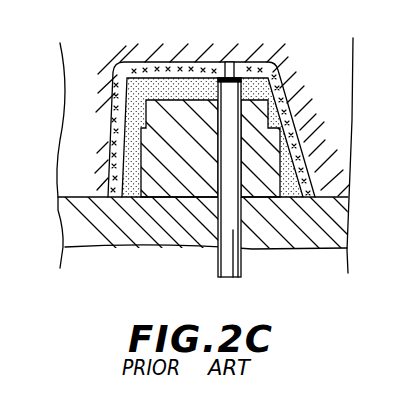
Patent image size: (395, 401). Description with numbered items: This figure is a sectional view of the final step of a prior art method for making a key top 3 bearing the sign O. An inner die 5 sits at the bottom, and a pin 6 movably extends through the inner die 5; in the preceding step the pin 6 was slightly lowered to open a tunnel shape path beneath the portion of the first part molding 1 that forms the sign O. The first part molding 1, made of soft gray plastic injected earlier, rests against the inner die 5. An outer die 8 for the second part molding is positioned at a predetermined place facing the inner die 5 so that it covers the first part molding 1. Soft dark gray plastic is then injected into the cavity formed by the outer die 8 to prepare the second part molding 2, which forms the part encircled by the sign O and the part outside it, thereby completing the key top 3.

The first part molding 1 is at (295, 109).
The second part molding 2 is at (240, 65).
The key top 3 is at (107, 130).
The inner die 5 is at (185, 249).
The pin 6 is at (242, 246).
The outer die 8 is at (185, 62).